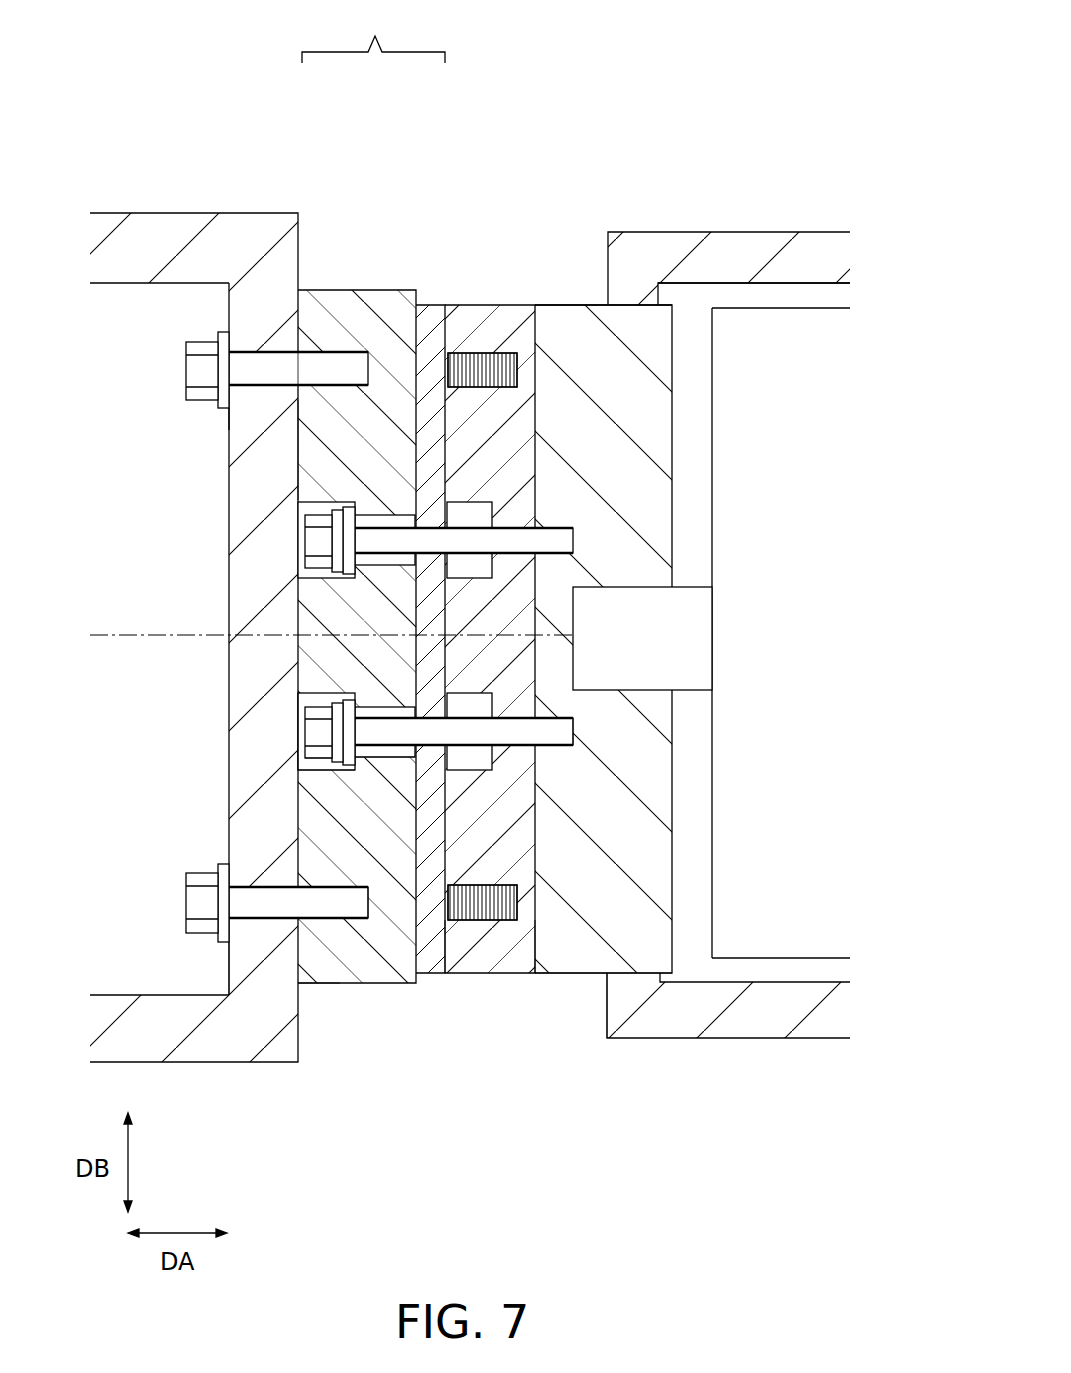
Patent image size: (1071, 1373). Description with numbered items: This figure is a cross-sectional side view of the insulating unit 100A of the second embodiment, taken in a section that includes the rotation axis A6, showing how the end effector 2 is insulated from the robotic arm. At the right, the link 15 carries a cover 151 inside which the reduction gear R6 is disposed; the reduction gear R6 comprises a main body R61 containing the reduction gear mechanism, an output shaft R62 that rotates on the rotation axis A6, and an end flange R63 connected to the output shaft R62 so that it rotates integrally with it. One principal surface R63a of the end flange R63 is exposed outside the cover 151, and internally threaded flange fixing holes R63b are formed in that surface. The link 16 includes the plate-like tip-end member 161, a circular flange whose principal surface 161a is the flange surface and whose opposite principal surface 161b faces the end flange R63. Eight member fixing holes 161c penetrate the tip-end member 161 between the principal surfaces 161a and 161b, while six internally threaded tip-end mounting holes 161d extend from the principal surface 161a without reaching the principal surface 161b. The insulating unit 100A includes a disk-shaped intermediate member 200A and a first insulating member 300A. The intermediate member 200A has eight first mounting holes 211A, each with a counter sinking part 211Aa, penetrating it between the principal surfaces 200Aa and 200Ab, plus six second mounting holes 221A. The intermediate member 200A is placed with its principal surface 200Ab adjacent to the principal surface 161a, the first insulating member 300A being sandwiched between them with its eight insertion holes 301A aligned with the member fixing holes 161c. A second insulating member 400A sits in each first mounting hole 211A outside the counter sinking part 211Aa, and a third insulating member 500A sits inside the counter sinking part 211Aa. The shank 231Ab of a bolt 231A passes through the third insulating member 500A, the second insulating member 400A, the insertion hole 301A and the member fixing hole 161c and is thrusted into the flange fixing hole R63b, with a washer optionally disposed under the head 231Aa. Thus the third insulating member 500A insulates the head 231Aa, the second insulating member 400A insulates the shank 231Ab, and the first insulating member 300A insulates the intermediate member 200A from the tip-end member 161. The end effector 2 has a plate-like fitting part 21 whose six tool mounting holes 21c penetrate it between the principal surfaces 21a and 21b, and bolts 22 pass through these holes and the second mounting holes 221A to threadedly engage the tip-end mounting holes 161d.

The insulating unit 100A is at (373, 35).
The end effector 2 is at (185, 213).
The principal surface of intermediate member 200Aa is at (283, 300).
The intermediate member 200A is at (357, 293).
The principal surface of intermediate member 200Ab is at (422, 300).
The first insulating member 300A is at (438, 297).
The tip-end member 161 is at (487, 298).
The link 16 is at (529, 299).
The link 15 is at (688, 214).
The cover 151 is at (728, 232).
The reduction gear R6 is at (772, 308).
The bolt 22 is at (188, 372).
The tool mounting hole 21c is at (228, 407).
The second mounting hole 221A is at (298, 390).
The fitting part 21 is at (260, 530).
The rotation axis A6 is at (135, 635).
The second insulating member 400A is at (393, 707).
The third insulating member 500A is at (355, 694).
The bolt 231A is at (305, 732).
The head 231Aa is at (315, 762).
The counter sinking part 211Aa is at (327, 770).
The first mounting hole 211A is at (380, 772).
The tip-end mounting hole 161d is at (517, 373).
The output shaft R62 is at (690, 587).
The flange fixing hole R63b is at (573, 732).
The member fixing hole 161c is at (570, 743).
The insertion hole 301A is at (455, 755).
The principal surface of fitting part 21a is at (227, 965).
The principal surface of fitting part 21b is at (330, 983).
The shank 231Ab is at (372, 925).
The principal surface of tip-end member 161a is at (442, 945).
The principal surface of end flange R63a is at (530, 945).
The principal surface of tip-end member 161b is at (537, 952).
The end flange R63 is at (597, 975).
The main body R61 is at (782, 960).